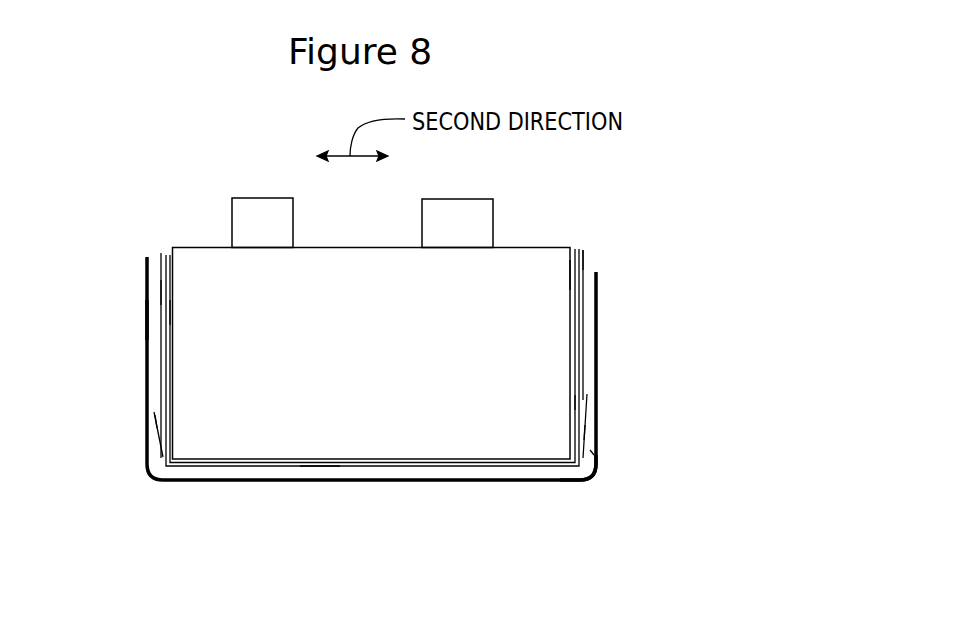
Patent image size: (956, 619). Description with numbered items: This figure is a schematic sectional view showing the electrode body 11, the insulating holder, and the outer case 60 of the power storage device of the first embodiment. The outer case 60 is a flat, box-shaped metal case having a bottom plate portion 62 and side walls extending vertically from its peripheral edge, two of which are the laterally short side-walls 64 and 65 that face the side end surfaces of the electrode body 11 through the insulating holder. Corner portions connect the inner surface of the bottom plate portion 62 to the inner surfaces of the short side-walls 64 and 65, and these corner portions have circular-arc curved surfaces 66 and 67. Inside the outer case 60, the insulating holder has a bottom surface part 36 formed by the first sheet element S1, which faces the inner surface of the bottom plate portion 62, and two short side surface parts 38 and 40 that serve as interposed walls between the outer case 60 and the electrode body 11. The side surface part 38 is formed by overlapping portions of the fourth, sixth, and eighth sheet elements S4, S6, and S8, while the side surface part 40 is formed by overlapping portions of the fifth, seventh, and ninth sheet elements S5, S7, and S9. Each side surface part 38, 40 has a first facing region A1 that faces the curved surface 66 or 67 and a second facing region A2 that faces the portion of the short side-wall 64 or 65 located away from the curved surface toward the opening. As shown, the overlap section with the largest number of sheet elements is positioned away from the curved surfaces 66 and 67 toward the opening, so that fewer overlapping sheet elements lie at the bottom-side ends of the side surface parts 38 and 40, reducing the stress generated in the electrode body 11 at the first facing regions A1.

The electrode body 11 is at (517, 272).
The bottom surface part 36 is at (255, 468).
The side surface part 38 is at (580, 357).
The side surface part 40 is at (160, 376).
The outer case 60 is at (598, 317).
The bottom plate portion 62 is at (402, 484).
The short side-wall 64 is at (598, 380).
The short side-wall 65 is at (148, 320).
The curved surface 66 is at (567, 482).
The curved surface 67 is at (161, 462).
The first sheet element S1 is at (317, 466).
The fourth sheet element S4 is at (583, 258).
The fifth sheet element S5 is at (160, 293).
The sixth sheet element S6 is at (569, 272).
The seventh sheet element S7 is at (168, 311).
The eighth sheet element S8 is at (583, 433).
The ninth sheet element S9 is at (157, 423).
The first facing region A1 is at (594, 454).
The second facing region A2 is at (575, 398).